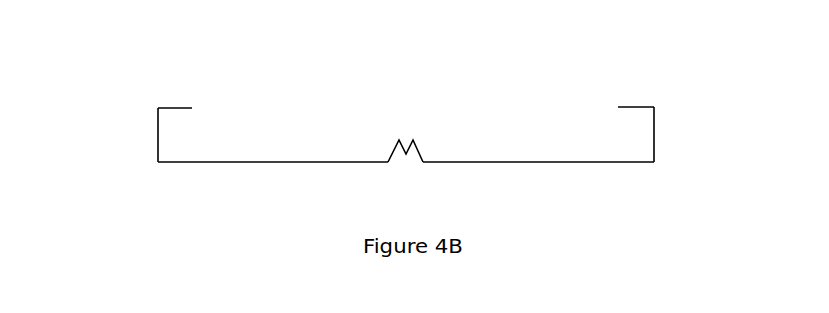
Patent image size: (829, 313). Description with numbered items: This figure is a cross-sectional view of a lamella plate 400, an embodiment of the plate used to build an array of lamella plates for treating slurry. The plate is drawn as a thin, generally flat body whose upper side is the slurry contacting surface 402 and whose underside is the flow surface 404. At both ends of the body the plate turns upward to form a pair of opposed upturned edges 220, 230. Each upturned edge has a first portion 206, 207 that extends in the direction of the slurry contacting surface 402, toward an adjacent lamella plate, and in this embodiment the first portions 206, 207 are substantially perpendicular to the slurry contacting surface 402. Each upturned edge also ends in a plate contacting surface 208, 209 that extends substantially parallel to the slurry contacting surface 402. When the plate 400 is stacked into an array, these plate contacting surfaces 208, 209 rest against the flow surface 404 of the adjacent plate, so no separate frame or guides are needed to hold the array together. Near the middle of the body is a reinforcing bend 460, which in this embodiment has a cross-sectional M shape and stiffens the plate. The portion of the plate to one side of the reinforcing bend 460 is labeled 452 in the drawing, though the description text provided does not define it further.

The lamella plate 400 is at (270, 66).
The slurry contacting surface 402 is at (356, 151).
The flow surface 404 is at (348, 174).
The second base portion 452 is at (505, 151).
The reinforcing bend 460 is at (398, 140).
The first portion 206 is at (158, 135).
The first portion 207 is at (654, 134).
The plate contacting surface 208 is at (171, 108).
The plate contacting surface 209 is at (630, 107).
The upturned edge 220 is at (157, 105).
The upturned edge 230 is at (656, 104).